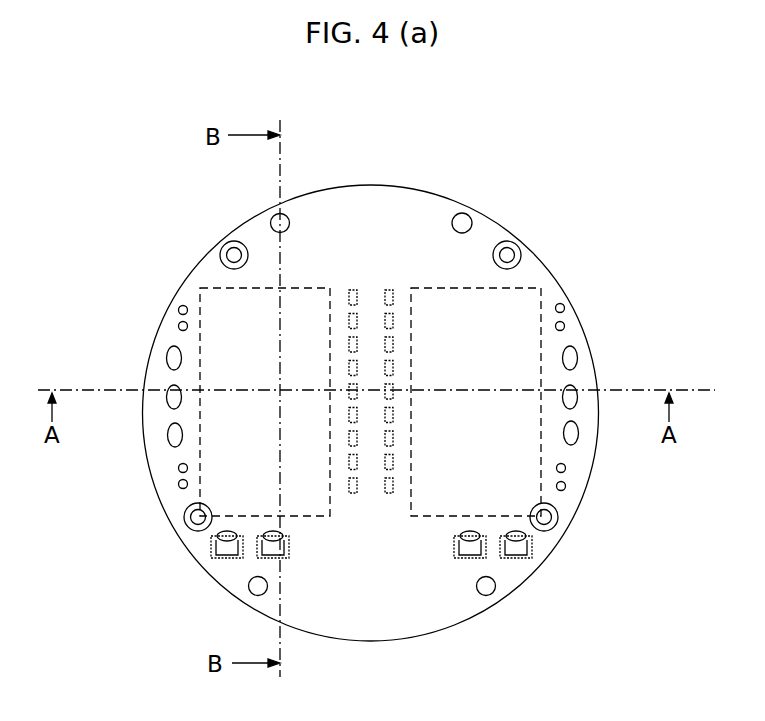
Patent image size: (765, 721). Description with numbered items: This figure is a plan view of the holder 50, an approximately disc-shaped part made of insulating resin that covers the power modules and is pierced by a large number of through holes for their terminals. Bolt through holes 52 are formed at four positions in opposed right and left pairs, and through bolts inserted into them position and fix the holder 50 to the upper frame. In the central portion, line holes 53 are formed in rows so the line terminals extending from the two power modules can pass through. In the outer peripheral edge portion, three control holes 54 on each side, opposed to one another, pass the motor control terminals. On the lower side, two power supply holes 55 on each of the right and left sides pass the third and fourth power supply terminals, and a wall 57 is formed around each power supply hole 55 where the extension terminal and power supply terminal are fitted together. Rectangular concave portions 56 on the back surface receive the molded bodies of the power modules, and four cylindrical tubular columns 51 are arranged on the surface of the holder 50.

The holder 50 is at (530, 255).
The tubular column 51 is at (227, 242).
The bolt through hole 52 is at (460, 213).
The line hole 53 is at (180, 306).
The control hole 54 is at (167, 389).
The power supply hole 55 is at (211, 543).
The concave portion 56 is at (199, 449).
The wall 57 is at (227, 558).